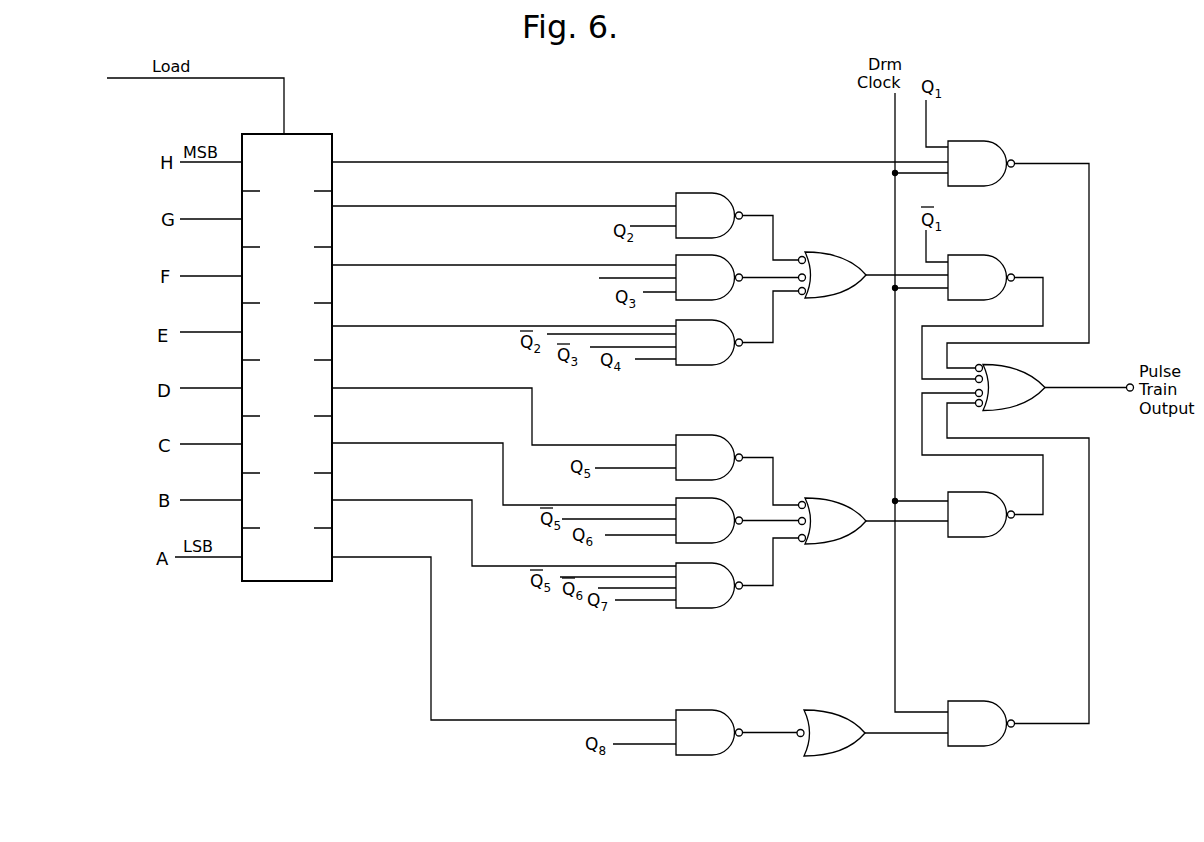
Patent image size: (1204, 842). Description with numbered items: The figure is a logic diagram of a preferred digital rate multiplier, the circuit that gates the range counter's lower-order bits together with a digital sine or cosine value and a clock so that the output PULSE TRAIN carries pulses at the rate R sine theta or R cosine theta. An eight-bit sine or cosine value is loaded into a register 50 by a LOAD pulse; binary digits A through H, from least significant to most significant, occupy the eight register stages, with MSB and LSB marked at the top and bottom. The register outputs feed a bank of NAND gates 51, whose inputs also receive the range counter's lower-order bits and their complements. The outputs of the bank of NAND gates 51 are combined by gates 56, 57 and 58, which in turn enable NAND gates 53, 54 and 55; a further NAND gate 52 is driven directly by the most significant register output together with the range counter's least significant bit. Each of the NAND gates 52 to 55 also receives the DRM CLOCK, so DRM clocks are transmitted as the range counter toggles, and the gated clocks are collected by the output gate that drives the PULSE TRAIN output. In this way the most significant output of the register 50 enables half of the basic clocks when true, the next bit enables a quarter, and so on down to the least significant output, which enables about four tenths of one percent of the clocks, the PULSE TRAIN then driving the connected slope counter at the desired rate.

The register 50 is at (332, 133).
The bank of NAND gates 51 is at (745, 205).
The NAND gate 52 is at (985, 146).
The NAND gate 53 is at (1000, 256).
The NAND gate 54 is at (984, 493).
The NAND gate 55 is at (986, 746).
The NAND gate 56 is at (842, 256).
The NAND gate 57 is at (828, 498).
The NAND gate 58 is at (841, 752).